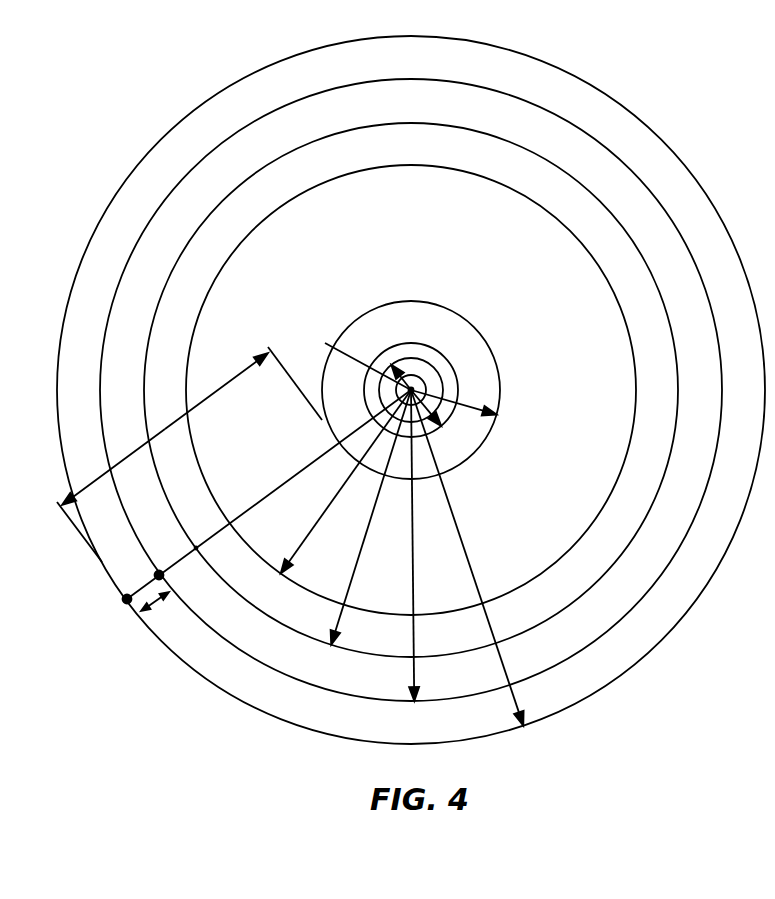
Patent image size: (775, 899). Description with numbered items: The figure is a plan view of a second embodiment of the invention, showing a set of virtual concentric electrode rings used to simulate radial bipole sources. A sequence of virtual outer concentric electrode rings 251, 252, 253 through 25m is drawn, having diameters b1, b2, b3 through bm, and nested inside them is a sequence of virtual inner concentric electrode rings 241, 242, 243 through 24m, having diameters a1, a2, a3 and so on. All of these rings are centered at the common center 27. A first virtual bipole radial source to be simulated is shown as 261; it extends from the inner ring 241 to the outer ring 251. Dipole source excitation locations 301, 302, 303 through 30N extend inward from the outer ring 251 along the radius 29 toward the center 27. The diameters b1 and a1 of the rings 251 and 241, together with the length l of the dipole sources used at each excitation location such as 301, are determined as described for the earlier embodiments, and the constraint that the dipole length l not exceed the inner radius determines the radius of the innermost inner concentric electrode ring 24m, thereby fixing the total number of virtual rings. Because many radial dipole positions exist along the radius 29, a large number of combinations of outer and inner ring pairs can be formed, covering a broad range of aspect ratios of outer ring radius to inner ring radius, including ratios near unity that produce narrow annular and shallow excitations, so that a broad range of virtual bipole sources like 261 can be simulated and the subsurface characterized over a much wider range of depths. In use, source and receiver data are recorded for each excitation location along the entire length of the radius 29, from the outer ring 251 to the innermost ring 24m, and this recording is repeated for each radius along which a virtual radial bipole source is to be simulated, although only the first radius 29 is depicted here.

The first virtual outer concentric electrode ring 251 is at (607, 688).
The second virtual outer concentric electrode ring 252 is at (612, 630).
The third virtual outer concentric electrode ring 253 is at (612, 568).
The m-th virtual outer concentric electrode ring 25m is at (583, 533).
The first virtual inner concentric electrode ring 241 is at (489, 437).
The second virtual inner concentric electrode ring 242 is at (485, 381).
The third virtual inner concentric electrode ring 243 is at (458, 380).
The innermost inner concentric electrode ring 24m is at (434, 366).
The center 27 is at (417, 374).
The diameter of first inner concentric ring a1 is at (482, 404).
The diameter of second inner concentric ring a2 is at (433, 420).
The diameter of third inner concentric ring a3 is at (395, 362).
The diameter of m-th outer concentric ring bm is at (301, 545).
The diameter of third outer concentric ring b3 is at (340, 620).
The diameter of second outer concentric ring b2 is at (416, 684).
The diameter of first outer concentric ring b1 is at (516, 707).
The N-th dipole source excitation location 30N is at (347, 361).
The radius 29 is at (312, 464).
The first dipole source excitation location 301 is at (144, 584).
The second dipole source excitation location 302 is at (177, 561).
The third dipole source excitation location 303 is at (213, 533).
The first virtual bipole radial source 261 is at (208, 397).
The dipole source length l is at (155, 603).